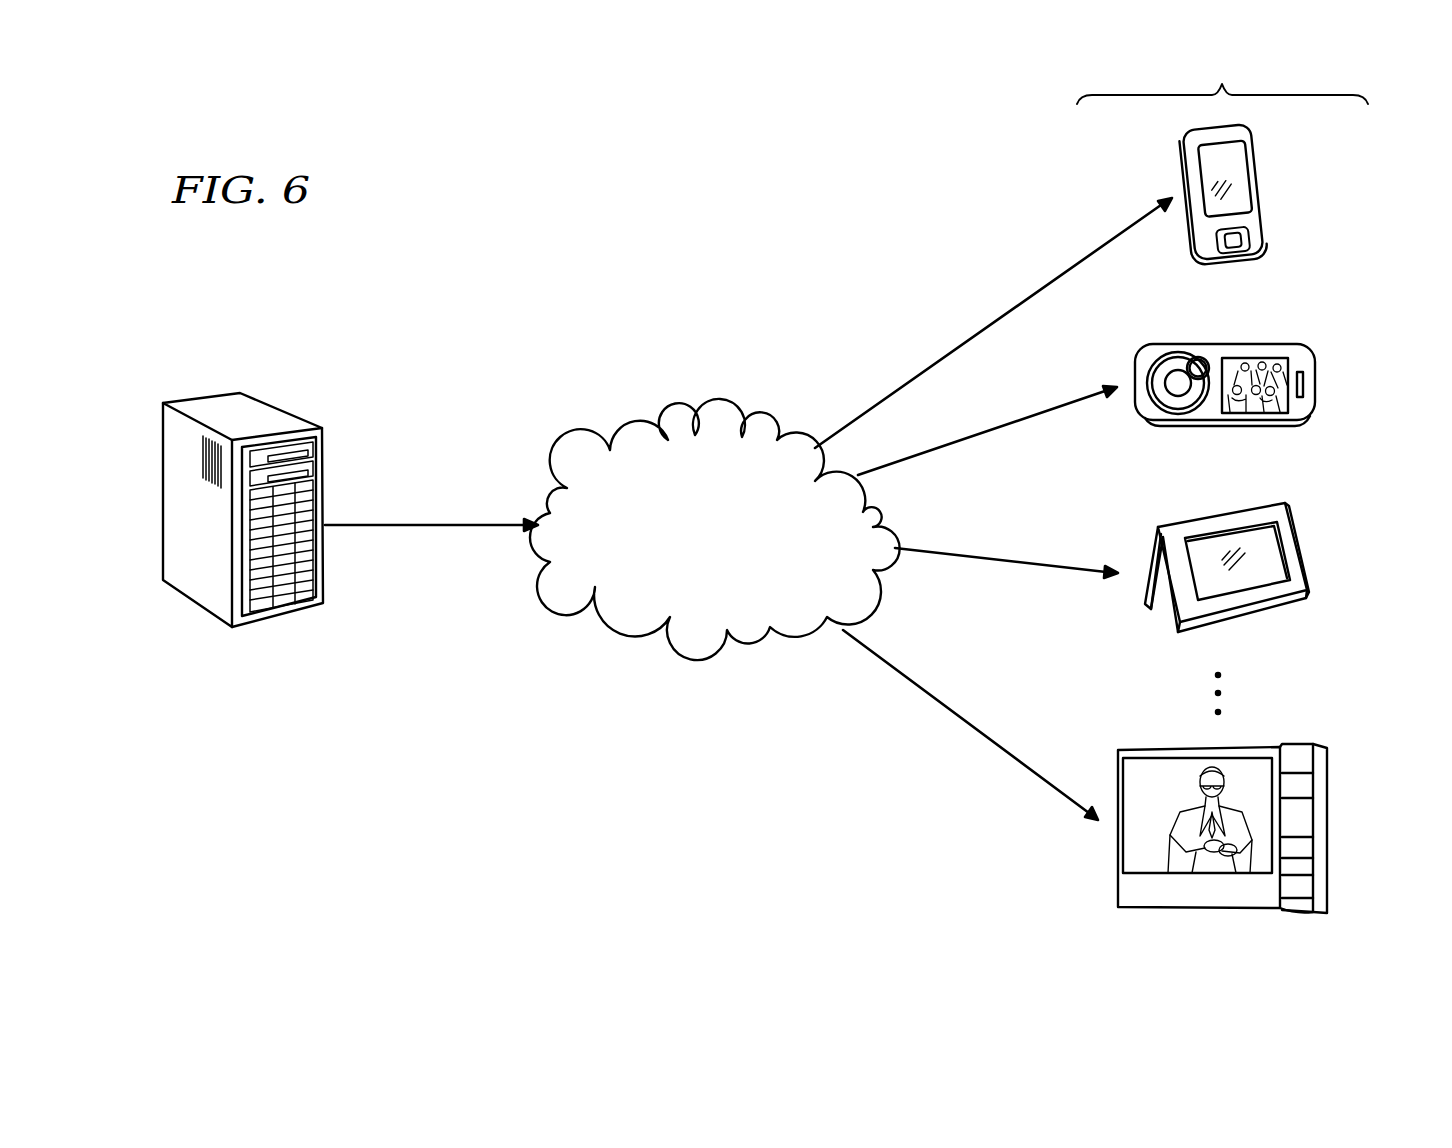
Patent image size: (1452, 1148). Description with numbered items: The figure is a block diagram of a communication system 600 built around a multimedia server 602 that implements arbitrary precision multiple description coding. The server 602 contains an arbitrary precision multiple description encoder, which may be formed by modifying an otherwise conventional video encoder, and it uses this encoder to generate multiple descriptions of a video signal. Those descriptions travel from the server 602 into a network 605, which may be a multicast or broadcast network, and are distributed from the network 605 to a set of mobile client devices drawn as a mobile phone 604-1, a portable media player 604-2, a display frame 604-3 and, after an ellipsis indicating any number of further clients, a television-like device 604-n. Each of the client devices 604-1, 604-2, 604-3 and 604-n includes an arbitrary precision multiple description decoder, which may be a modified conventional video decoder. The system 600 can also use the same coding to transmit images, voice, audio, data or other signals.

The communication system 600 is at (303, 283).
The multimedia server 602 is at (260, 412).
The network 605 is at (723, 412).
The mobile client device 604-1 is at (1258, 185).
The mobile client device 604-2 is at (1317, 367).
The mobile client device 604-3 is at (1300, 540).
The mobile client device 604-n is at (1328, 832).